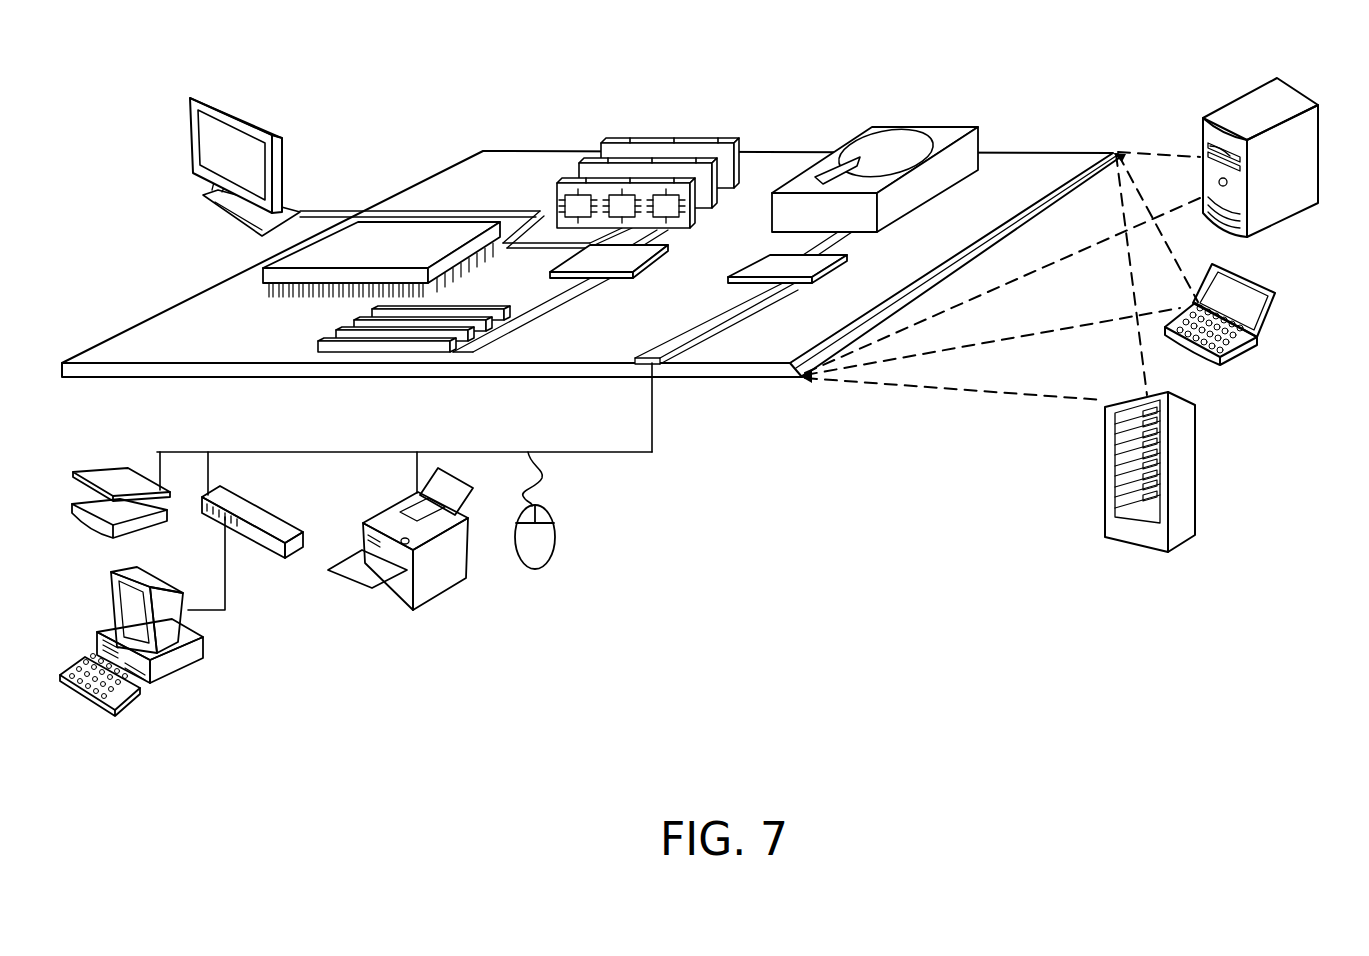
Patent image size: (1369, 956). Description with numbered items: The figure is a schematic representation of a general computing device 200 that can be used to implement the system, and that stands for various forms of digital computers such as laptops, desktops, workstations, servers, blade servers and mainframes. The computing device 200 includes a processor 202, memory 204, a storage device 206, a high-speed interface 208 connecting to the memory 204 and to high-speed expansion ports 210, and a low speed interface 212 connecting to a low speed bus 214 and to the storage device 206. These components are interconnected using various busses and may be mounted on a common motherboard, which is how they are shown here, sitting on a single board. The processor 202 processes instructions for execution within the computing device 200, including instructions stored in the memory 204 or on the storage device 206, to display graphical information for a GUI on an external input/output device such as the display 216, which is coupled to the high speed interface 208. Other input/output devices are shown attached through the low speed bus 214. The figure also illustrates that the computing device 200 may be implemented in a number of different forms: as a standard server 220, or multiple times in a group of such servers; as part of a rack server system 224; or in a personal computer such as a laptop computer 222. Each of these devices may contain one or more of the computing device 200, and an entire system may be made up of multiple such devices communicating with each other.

The computing device 200 is at (398, 112).
The processor 202 is at (272, 275).
The memory 204 is at (627, 143).
The storage device 206 is at (870, 131).
The high-speed interface 208 is at (582, 257).
The high-speed expansion ports 210 is at (335, 333).
The low speed interface 212 is at (770, 262).
The low speed bus 214 is at (657, 362).
The display 216 is at (190, 97).
The standard server 220 is at (1203, 135).
The laptop computer 222 is at (1274, 291).
The rack server system 224 is at (1105, 497).